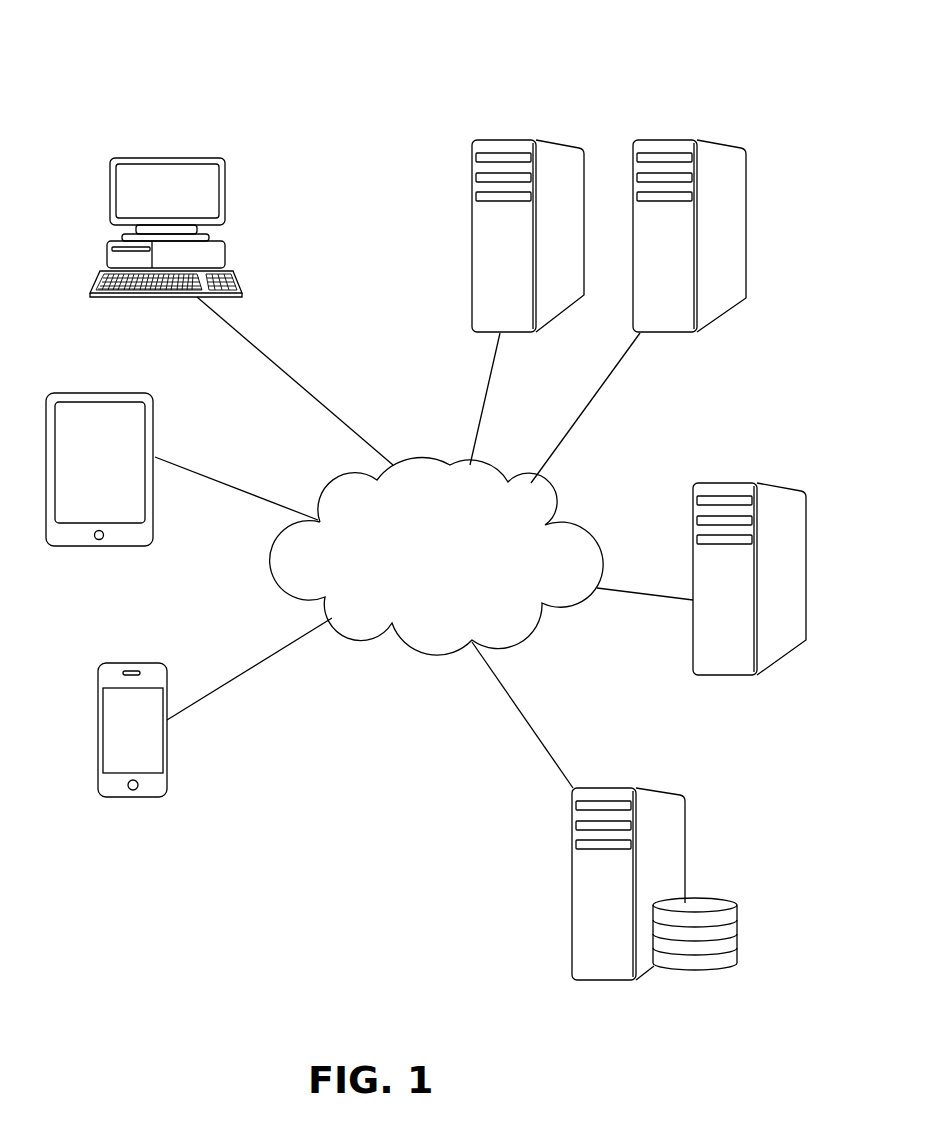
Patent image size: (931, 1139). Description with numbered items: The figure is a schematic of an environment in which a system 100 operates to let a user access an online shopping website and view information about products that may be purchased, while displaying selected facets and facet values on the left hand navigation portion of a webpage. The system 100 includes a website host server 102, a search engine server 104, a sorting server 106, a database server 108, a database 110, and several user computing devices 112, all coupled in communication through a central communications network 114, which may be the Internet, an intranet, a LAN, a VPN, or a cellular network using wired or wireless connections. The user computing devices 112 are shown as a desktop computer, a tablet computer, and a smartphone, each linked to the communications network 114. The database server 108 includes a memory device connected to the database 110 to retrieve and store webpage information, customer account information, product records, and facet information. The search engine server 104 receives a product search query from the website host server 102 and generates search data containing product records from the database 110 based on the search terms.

The system 100 is at (618, 35).
The website host server 102 is at (551, 126).
The search engine server 104 is at (715, 130).
The sorting server 106 is at (769, 481).
The database server 108 is at (701, 809).
The database 110 is at (739, 898).
The user computing device 112 is at (138, 156).
The communications network 114 is at (454, 576).